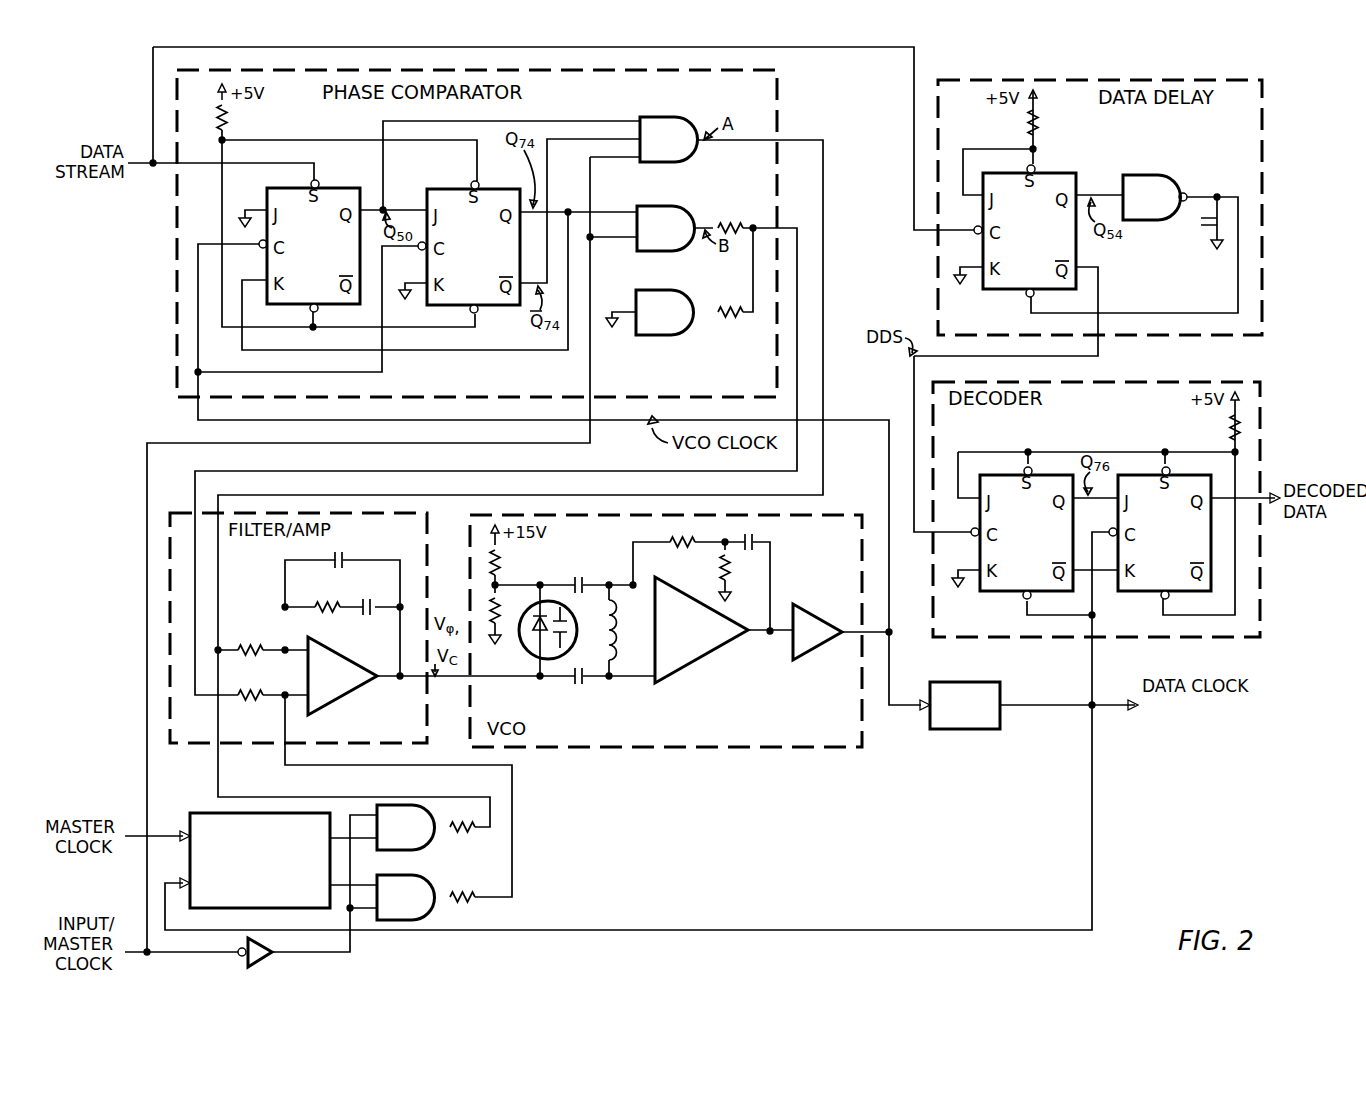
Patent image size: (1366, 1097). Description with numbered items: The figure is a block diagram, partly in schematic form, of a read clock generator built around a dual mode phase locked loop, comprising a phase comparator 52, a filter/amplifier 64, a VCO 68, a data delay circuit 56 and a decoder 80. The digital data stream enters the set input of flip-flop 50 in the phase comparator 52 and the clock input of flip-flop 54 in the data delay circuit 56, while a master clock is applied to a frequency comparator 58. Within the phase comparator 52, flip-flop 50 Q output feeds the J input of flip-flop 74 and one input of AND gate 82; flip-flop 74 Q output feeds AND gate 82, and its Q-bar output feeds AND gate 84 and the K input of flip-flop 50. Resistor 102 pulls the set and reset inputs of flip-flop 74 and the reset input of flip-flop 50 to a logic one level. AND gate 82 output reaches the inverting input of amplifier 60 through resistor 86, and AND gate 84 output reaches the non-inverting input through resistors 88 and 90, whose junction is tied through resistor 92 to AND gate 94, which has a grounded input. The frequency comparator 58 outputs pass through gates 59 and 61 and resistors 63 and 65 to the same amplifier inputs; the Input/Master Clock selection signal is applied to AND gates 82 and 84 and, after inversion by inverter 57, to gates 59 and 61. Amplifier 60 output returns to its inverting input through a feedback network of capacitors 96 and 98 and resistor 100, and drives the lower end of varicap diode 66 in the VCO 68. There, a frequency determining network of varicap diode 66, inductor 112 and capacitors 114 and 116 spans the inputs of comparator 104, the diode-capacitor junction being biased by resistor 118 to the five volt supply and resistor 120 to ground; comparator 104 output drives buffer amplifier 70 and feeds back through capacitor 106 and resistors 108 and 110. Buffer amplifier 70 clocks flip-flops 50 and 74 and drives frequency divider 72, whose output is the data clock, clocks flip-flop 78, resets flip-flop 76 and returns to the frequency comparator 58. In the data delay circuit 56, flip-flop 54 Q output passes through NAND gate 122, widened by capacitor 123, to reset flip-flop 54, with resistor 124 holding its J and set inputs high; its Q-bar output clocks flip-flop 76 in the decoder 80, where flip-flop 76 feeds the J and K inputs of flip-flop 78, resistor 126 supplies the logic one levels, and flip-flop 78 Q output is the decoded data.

The flip-flop 50 is at (360, 188).
The phase comparator 52 is at (177, 388).
The flip-flop 54 is at (1052, 173).
The data delay circuit 56 is at (1264, 206).
The inverter 57 is at (270, 944).
The frequency comparator 58 is at (205, 813).
The gate 59 is at (410, 850).
The amplifier 60 is at (350, 660).
The gate 61 is at (425, 906).
The resistor 63 is at (460, 834).
The filter/amplifier 64 is at (427, 728).
The resistor 65 is at (476, 900).
The varicap diode 66 is at (574, 628).
The VCO 68 is at (848, 750).
The buffer amplifier 70 is at (820, 618).
The frequency divider 72 is at (975, 682).
The flip-flop 74 is at (512, 189).
The flip-flop 76 is at (1010, 475).
The flip-flop 78 is at (1183, 475).
The decoder 80 is at (1262, 456).
The AND gate 82 is at (668, 117).
The AND gate 84 is at (663, 206).
The resistor 86 is at (245, 646).
The resistor 88 is at (724, 222).
The resistor 90 is at (245, 691).
The resistor 92 is at (734, 306).
The AND gate 94 is at (662, 290).
The capacitor 96 is at (345, 553).
The capacitor 98 is at (366, 598).
The resistor 100 is at (330, 600).
The resistor 102 is at (226, 118).
The comparator 104 is at (708, 657).
The capacitor 106 is at (752, 538).
The resistor 108 is at (720, 576).
The resistor 110 is at (672, 538).
The inductor 112 is at (616, 636).
The capacitor 114 is at (578, 577).
The capacitor 116 is at (578, 685).
The resistor 118 is at (498, 560).
The resistor 120 is at (500, 620).
The NAND gate 122 is at (1158, 175).
The capacitor 123 is at (1208, 222).
The resistor 124 is at (1037, 119).
The resistor 126 is at (1231, 430).